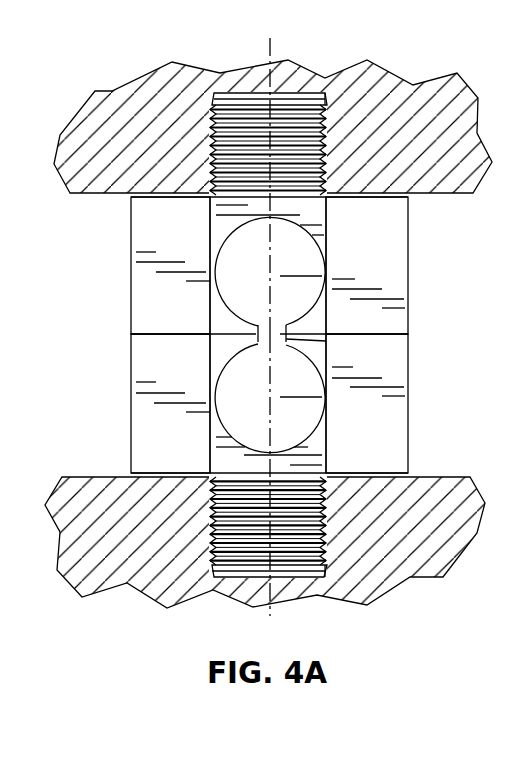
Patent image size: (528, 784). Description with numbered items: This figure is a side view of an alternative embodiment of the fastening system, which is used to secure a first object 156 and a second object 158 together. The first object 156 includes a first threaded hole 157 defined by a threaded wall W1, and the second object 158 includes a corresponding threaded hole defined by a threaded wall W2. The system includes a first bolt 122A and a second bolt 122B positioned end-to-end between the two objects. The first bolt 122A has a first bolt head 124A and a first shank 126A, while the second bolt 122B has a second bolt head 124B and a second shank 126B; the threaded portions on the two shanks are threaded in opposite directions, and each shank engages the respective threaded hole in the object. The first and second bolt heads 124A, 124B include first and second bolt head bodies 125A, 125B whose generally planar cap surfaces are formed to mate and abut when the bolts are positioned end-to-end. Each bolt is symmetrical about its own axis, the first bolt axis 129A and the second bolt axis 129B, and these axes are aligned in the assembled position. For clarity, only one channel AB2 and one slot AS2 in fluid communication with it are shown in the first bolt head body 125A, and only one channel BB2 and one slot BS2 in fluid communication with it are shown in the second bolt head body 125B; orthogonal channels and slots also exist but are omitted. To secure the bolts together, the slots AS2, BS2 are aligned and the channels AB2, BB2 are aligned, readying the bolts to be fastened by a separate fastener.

The first object 156 is at (80, 117).
The second object 158 is at (110, 585).
The first threaded hole 157 is at (211, 93).
The first shank 126A is at (311, 133).
The second shank 126B is at (311, 504).
The threaded wall W1 is at (327, 100).
The threaded wall W2 is at (325, 557).
The first bolt axis 129A is at (269, 55).
The second bolt axis 129B is at (277, 586).
The first bolt 122A is at (107, 225).
The second bolt 122B is at (110, 401).
The first bolt head 124A is at (423, 248).
The second bolt head 124B is at (421, 404).
The first bolt head body 125A is at (148, 299).
The second bolt head body 125B is at (148, 450).
The channel AB2 is at (270, 271).
The channel BB2 is at (270, 398).
The slot AS2 is at (256, 333).
The slot BS2 is at (288, 340).